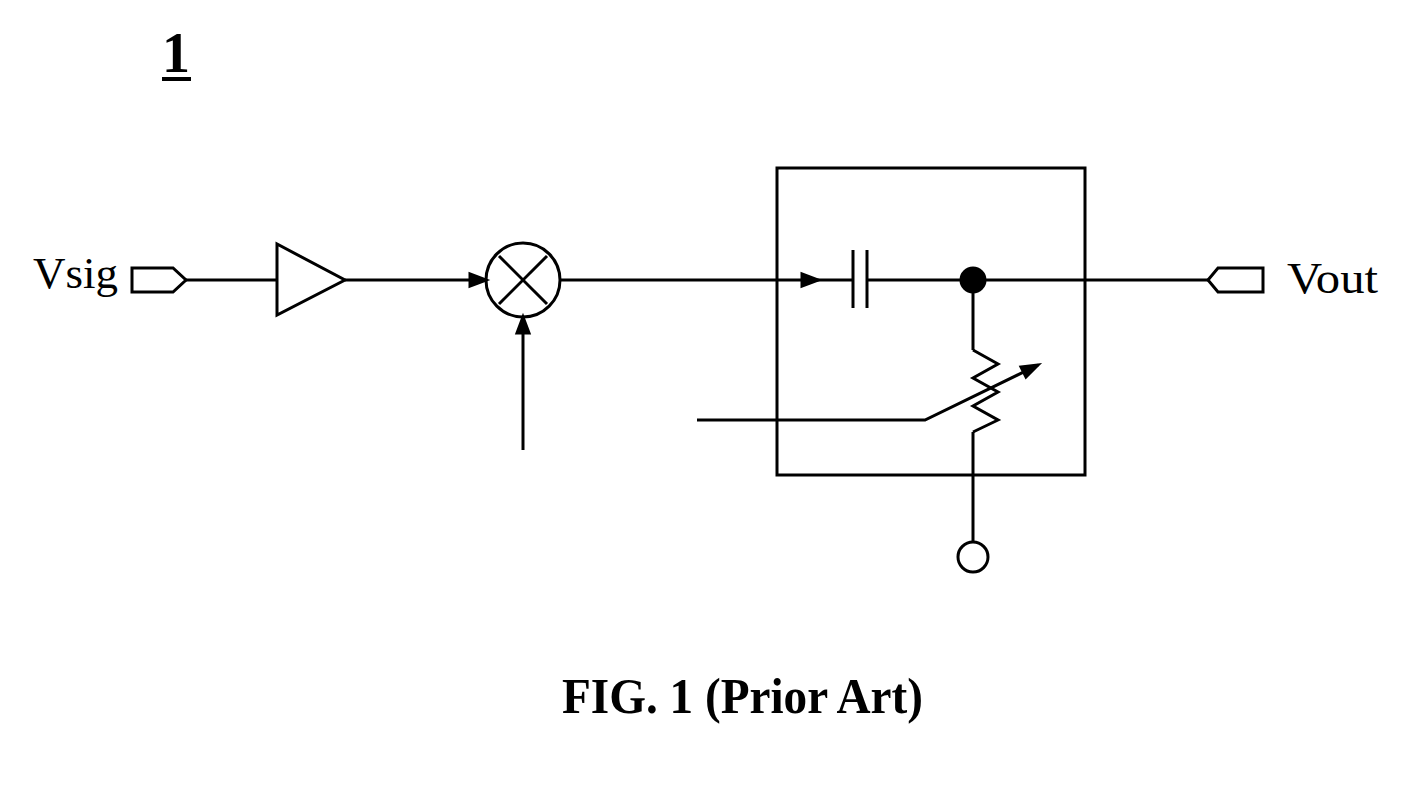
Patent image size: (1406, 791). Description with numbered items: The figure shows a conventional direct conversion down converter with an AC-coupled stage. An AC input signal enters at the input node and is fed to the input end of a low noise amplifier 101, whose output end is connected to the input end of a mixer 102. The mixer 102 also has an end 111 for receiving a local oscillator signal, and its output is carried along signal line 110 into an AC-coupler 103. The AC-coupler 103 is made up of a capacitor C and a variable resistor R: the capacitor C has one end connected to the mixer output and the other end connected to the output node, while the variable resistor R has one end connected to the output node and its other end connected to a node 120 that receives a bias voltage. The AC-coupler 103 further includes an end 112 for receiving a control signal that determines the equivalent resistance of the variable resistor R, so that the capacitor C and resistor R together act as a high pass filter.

The low noise amplifier 101 is at (318, 257).
The mixer 102 is at (532, 232).
The AC-coupler 103 is at (1085, 168).
The mixed signal line 110 is at (653, 272).
The end for receiving a local oscillator signal 111 is at (518, 400).
The end for receiving a control signal 112 is at (725, 425).
The node for receiving a bias voltage 120 is at (953, 552).